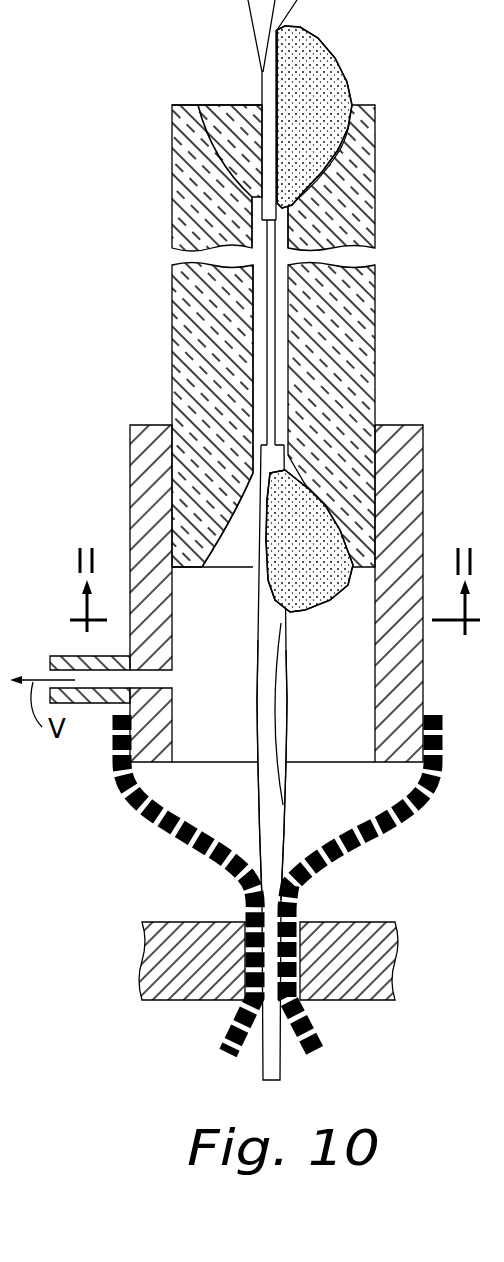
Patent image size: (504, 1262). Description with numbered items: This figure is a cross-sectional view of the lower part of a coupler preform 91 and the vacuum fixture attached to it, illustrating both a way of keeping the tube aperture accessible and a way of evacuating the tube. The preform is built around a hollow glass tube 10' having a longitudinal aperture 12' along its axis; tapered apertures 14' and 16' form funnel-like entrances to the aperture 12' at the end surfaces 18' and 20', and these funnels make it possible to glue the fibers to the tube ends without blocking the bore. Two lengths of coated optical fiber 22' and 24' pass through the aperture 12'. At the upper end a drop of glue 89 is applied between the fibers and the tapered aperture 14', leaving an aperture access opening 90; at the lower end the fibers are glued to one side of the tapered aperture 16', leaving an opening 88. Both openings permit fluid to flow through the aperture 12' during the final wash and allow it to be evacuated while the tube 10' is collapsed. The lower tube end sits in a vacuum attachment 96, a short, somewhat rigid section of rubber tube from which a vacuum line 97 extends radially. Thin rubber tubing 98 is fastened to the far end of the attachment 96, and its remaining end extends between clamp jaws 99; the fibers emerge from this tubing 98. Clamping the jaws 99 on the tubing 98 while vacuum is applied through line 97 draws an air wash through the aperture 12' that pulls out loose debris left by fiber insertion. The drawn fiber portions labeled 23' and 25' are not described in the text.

The tube 10' is at (231, 178).
The end surface 18' is at (212, 70).
The tapered aperture 14' is at (226, 129).
The aperture access opening 90 is at (250, 190).
The drop of glue 89 is at (320, 68).
The coupler preform 91 is at (164, 311).
The coated optical fiber 22' is at (272, 540).
The longitudinal aperture 12' is at (226, 369).
The tapered aperture 16' is at (220, 517).
The end surface 20' is at (212, 595).
The vacuum attachment 96 is at (130, 470).
The opening 88 is at (251, 490).
The fiber cladding 23' is at (227, 770).
The coated optical fiber 24' is at (320, 775).
The fiber jacket 25' is at (317, 714).
The vacuum line 97 is at (87, 705).
The thin rubber tubing 98 is at (377, 835).
The clamp jaws 99 is at (142, 962).